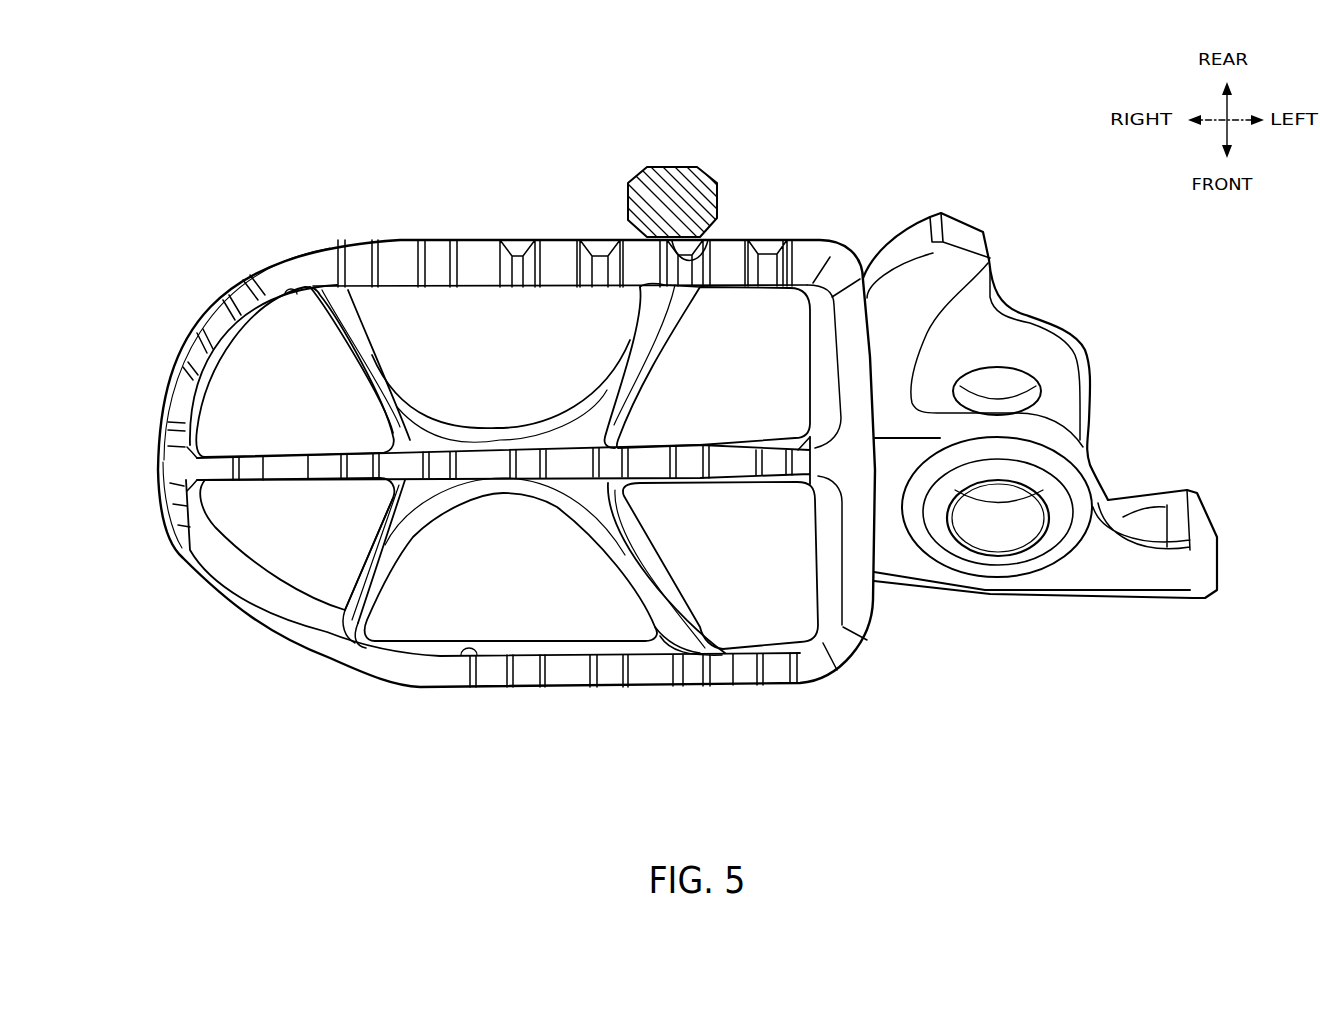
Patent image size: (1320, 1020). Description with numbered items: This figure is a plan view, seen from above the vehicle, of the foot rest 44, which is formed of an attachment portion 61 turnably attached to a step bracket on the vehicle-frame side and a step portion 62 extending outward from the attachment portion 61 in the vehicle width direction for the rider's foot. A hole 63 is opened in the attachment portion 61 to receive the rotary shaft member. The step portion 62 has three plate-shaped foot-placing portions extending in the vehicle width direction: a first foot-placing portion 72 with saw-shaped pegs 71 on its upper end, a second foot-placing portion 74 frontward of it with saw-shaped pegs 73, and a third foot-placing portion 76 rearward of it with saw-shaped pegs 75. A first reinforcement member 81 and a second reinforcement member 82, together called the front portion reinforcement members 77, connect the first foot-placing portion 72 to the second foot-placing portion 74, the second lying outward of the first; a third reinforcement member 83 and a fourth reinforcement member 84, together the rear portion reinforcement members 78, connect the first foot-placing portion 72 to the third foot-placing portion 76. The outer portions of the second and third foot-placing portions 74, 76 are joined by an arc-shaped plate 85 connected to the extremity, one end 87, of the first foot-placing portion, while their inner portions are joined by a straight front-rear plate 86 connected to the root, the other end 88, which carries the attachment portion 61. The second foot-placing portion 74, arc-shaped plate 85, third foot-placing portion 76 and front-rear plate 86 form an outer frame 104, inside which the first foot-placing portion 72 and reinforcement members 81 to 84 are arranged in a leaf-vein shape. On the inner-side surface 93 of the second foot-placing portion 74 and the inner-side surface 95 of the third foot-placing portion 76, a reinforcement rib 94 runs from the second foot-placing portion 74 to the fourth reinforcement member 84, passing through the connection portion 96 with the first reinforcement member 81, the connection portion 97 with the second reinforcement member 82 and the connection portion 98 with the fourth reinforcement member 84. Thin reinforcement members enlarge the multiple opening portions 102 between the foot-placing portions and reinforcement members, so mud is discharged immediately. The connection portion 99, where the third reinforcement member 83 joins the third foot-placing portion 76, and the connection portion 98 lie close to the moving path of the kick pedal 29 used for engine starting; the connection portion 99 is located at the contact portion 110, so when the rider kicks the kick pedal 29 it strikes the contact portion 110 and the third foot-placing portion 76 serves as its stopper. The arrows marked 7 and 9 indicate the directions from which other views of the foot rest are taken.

The section line 7 is at (515, 742).
The section line 9 is at (626, 160).
The kick pedal 29 is at (686, 165).
The foot rest 44 is at (1034, 105).
The attachment portion 61 is at (952, 213).
The step portion 62 is at (504, 238).
The hole 63 is at (1017, 372).
The saw-shaped pegs 71 is at (705, 452).
The first foot-placing portion 72 is at (687, 458).
The saw-shaped pegs 73 is at (764, 658).
The second foot-placing portion 74 is at (731, 657).
The saw-shaped pegs 75 is at (768, 268).
The third foot-placing portion 76 is at (730, 265).
The front portion reinforcement members 77 is at (372, 538).
The rear portion reinforcement members 78 is at (340, 343).
The first reinforcement member 81 is at (634, 570).
The second reinforcement member 82 is at (370, 568).
The third reinforcement member 83 is at (633, 357).
The fourth reinforcement member 84 is at (360, 358).
The arc-shaped plate 85 is at (200, 553).
The front-rear plate 86 is at (857, 580).
The one end 87 is at (212, 467).
The other end 88 is at (800, 478).
The inner-side surface 93 is at (468, 655).
The reinforcement rib 94 is at (416, 645).
The inner-side surface 95 is at (298, 284).
The connection portion 96 is at (656, 636).
The connection portion 97 is at (342, 627).
The connection portion 98 is at (333, 293).
The connection portion 99 is at (675, 290).
The opening portions 102 is at (392, 433).
The outer frame 104 is at (262, 638).
The contact portion 110 is at (700, 262).